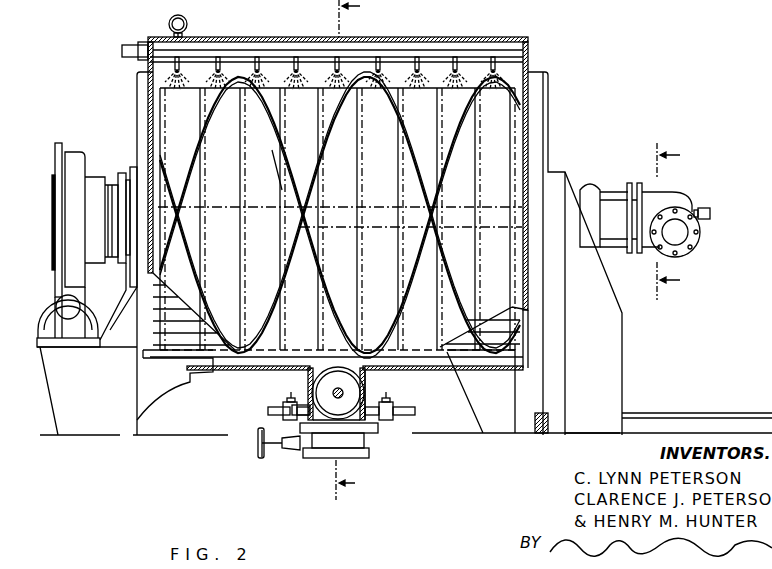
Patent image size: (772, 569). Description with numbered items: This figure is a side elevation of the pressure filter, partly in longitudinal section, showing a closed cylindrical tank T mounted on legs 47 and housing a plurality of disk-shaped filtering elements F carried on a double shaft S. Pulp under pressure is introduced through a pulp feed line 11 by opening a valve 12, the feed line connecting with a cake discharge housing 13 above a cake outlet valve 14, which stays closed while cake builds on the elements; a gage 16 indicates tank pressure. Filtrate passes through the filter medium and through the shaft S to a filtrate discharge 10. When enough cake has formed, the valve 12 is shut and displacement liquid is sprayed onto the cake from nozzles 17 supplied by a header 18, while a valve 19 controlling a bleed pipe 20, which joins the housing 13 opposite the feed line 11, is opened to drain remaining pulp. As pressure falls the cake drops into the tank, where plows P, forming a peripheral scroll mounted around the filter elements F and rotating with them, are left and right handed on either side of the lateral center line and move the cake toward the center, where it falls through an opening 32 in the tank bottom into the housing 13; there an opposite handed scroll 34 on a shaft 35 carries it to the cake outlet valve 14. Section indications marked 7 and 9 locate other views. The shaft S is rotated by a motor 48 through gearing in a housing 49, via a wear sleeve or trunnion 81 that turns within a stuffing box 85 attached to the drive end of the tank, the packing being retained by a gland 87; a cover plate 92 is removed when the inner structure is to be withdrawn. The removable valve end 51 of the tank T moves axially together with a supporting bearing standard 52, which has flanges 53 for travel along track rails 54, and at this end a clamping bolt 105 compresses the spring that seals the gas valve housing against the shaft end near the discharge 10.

The section line 7- 7 is at (348, 483).
The section line 9- 9 is at (674, 212).
The filtrate discharge 10 is at (697, 238).
The pulp feed line 11 is at (380, 405).
The valve 12 is at (392, 418).
The cake discharge housing 13 is at (365, 380).
The cake outlet valve 14 is at (345, 452).
The gage 16 is at (186, 17).
The nozzles 17 is at (218, 57).
The header 18 is at (135, 45).
The valve 19 is at (281, 408).
The bleed pipe 20 is at (306, 410).
The opening 32 is at (320, 365).
The scroll 34 is at (338, 372).
The shaft 35 is at (330, 399).
The legs 47 is at (133, 383).
The motor 48 is at (50, 285).
The housing 49 is at (78, 152).
The valve end 51 is at (537, 90).
The bearing standard 52 is at (612, 338).
The flanges 53 is at (600, 410).
The track rails 54 is at (700, 412).
The wear sleeve or trunnion 81 is at (113, 185).
The stuffing box 85 is at (136, 167).
The gland 87 is at (118, 301).
The cover plate 92 is at (55, 192).
The clamping bolt 105 is at (710, 213).
The plows P is at (258, 108).
The filtering elements F is at (274, 190).
The double shaft S is at (371, 222).
The tank T is at (226, 374).